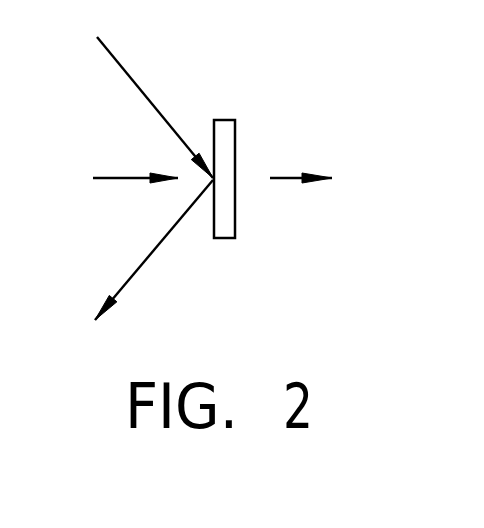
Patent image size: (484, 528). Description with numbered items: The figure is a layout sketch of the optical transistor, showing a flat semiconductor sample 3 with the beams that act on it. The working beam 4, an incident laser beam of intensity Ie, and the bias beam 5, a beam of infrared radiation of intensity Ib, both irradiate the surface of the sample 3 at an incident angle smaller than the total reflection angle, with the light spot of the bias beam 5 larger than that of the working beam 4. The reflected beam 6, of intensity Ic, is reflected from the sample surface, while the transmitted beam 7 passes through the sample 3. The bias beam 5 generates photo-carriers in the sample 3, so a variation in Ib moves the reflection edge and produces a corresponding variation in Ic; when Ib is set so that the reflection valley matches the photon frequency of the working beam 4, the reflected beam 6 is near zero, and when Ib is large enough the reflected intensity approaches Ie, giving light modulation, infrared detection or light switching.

The sample 3 is at (223, 139).
The working beam 4 is at (135, 89).
The bias beam 5 is at (112, 170).
The reflected beam 6 is at (135, 264).
The transmitted beam 7 is at (314, 182).